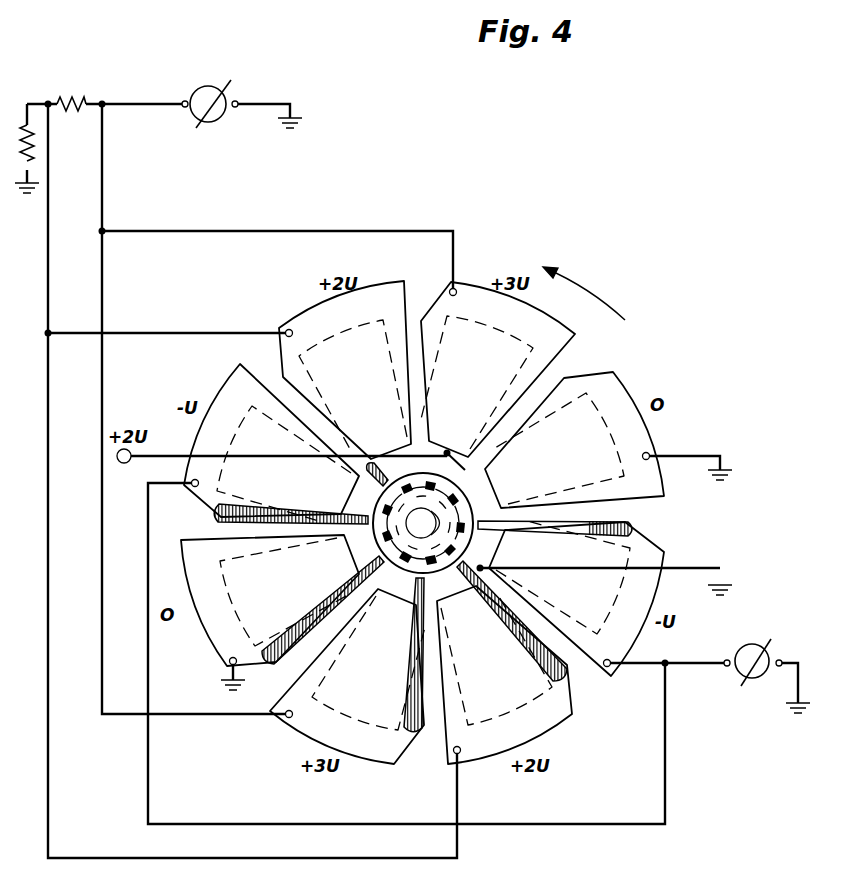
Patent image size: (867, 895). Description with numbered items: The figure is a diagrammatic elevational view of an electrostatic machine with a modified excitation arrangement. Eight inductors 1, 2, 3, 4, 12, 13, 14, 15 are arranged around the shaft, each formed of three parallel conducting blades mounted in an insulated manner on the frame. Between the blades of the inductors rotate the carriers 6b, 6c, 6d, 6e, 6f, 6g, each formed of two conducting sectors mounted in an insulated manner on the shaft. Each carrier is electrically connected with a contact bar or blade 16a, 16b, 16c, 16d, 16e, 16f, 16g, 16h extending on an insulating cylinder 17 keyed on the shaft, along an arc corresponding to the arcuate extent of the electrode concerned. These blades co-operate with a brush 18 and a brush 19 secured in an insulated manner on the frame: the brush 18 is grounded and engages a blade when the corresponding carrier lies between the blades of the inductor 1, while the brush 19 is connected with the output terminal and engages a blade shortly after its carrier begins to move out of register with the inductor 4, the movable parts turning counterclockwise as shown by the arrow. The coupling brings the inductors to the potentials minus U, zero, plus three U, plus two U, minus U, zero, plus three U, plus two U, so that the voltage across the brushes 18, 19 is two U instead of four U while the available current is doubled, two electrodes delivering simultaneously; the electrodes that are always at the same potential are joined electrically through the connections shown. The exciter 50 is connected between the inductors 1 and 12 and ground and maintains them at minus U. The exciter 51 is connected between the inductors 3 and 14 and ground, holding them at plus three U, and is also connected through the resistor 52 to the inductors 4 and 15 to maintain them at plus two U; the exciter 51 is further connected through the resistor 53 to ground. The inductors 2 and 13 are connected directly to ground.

The inductor 1 is at (650, 600).
The inductor 2 is at (617, 383).
The inductor 3 is at (545, 320).
The inductor 4 is at (396, 286).
The inductor 12 is at (230, 383).
The inductor 13 is at (217, 638).
The inductor 14 is at (378, 762).
The inductor 15 is at (470, 760).
The carrier 6b is at (285, 368).
The carrier 6c is at (212, 515).
The carrier 6d is at (290, 660).
The carrier 6e is at (410, 740).
The carrier 6f is at (570, 675).
The carrier 6g is at (636, 530).
The contact blade 16a is at (455, 472).
The contact blade 16b is at (396, 462).
The contact blade 16c is at (352, 506).
The contact blade 16d is at (355, 549).
The contact blade 16e is at (402, 592).
The contact blade 16f is at (446, 590).
The contact blade 16g is at (492, 540).
The contact blade 16h is at (498, 492).
The insulating cylinder 17 is at (505, 507).
The brush 18 is at (500, 560).
The brush 19 is at (440, 448).
The exciter 50 is at (745, 680).
The exciter 51 is at (196, 92).
The resistor 52 is at (73, 93).
The resistor 53 is at (30, 146).